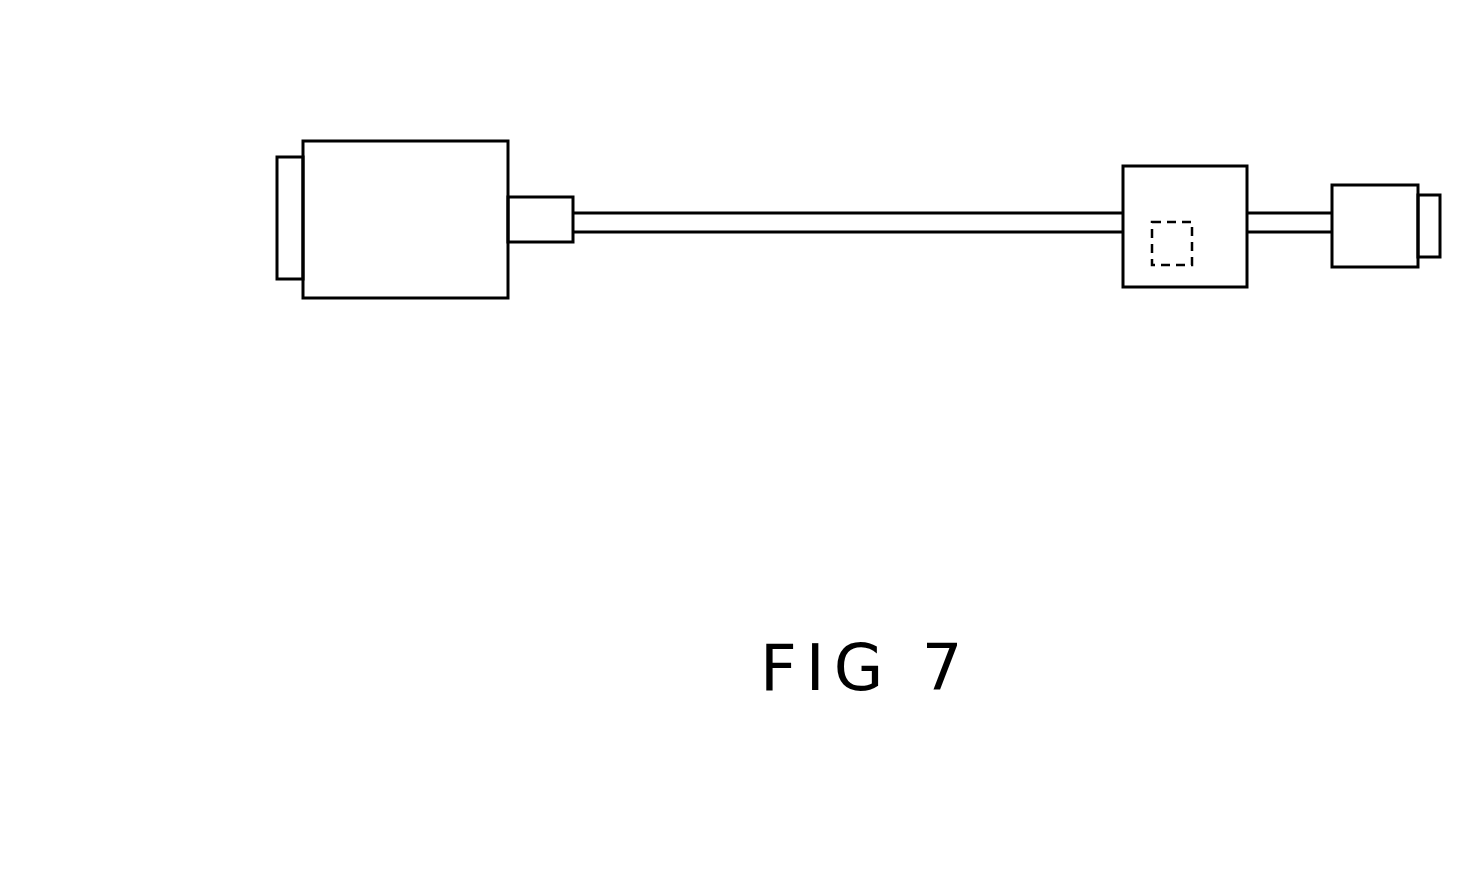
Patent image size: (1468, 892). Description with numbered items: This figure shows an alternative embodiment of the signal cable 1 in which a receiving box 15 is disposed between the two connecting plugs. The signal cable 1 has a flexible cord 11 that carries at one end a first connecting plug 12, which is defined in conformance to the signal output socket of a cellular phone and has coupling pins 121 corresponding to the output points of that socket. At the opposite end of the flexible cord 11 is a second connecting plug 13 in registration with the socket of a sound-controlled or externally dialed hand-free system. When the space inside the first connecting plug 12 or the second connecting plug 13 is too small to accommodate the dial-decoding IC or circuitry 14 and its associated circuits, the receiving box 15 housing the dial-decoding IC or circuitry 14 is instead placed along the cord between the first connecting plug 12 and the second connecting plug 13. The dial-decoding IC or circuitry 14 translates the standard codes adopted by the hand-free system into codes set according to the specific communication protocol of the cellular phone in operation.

The signal cable 1 is at (863, 165).
The flexible cord 11 is at (828, 233).
The first connecting plug 12 is at (467, 312).
The coupling pins 121 is at (289, 261).
The second connecting plug 13 is at (1373, 282).
The dial-decoding IC or circuitry 14 is at (1167, 235).
The receiving box 15 is at (1200, 285).